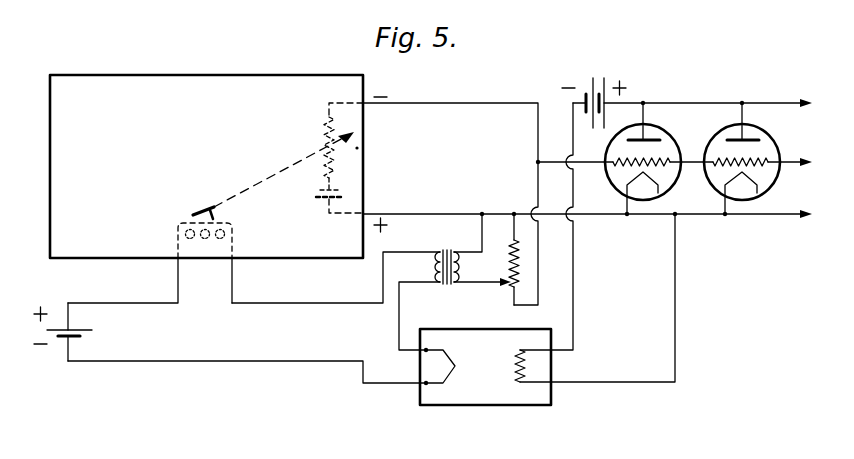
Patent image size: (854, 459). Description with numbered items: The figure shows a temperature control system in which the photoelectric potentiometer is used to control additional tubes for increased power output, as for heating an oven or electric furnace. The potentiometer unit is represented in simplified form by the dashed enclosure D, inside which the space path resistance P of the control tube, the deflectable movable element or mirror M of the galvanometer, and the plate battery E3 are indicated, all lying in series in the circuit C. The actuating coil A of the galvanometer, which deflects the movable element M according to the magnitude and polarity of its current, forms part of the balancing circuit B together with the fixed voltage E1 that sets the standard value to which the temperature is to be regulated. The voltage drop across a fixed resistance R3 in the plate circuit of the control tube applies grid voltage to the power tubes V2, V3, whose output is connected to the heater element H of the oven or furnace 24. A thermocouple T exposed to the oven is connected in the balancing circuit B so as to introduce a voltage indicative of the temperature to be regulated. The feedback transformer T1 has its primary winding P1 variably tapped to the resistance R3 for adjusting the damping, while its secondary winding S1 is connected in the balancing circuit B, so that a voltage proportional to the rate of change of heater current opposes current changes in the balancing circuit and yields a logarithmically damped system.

The potentiometer unit enclosure D is at (207, 87).
The space path resistance P is at (320, 133).
The movable element or mirror M is at (192, 210).
The plate battery E3 is at (308, 197).
The circuit C is at (446, 112).
The power tube V2 is at (655, 124).
The power tube V3 is at (754, 124).
The feedback transformer T1 is at (371, 282).
The secondary winding S1 is at (336, 301).
The primary winding P1 is at (456, 240).
The fixed resistance R3 is at (522, 262).
The actuating coil A is at (205, 245).
The fixed voltage E1 is at (88, 330).
The balancing circuit B is at (226, 352).
The oven or furnace 24 is at (547, 327).
The thermocouple T is at (447, 357).
The heater element H is at (595, 298).